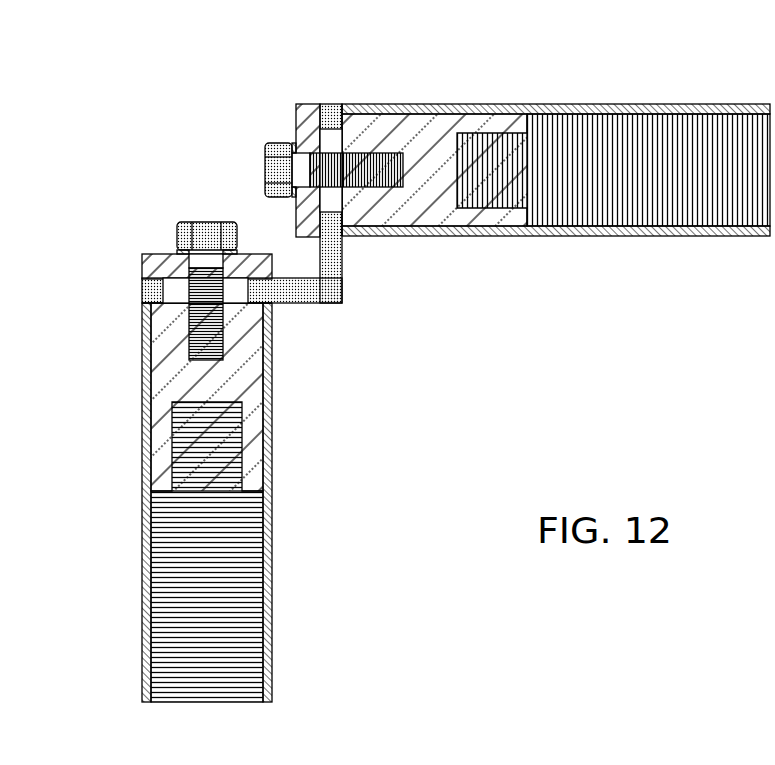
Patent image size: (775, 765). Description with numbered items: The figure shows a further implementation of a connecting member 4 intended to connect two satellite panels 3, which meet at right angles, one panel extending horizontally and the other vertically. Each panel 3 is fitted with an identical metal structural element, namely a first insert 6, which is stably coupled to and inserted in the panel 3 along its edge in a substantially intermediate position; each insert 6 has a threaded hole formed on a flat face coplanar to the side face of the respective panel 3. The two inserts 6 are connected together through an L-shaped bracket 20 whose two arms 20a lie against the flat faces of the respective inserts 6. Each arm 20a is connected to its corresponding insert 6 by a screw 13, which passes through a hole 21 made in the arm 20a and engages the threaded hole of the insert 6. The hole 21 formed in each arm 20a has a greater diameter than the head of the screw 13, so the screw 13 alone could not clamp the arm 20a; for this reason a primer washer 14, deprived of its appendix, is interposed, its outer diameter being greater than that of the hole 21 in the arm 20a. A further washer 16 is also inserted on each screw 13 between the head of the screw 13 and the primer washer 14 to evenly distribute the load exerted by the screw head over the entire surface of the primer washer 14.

The panel 3 is at (688, 145).
The connecting member 4 is at (256, 221).
The first insert 6 is at (430, 128).
The screw 13 is at (380, 140).
The primer washer 14 is at (312, 110).
The further washer 16 is at (294, 146).
The L-shaped bracket 20 is at (308, 253).
The arm 20a is at (343, 250).
The clearance opening 21 is at (318, 203).